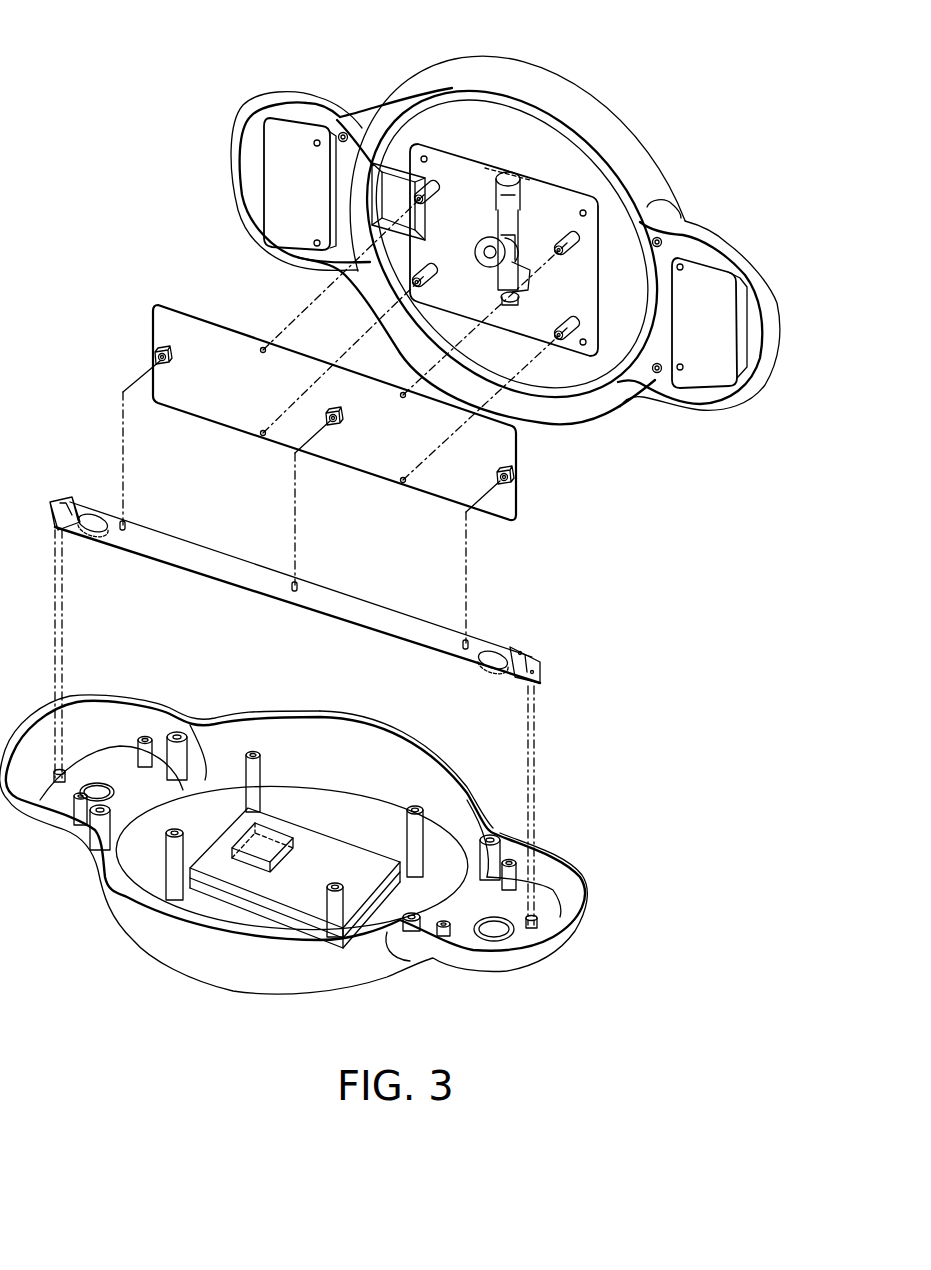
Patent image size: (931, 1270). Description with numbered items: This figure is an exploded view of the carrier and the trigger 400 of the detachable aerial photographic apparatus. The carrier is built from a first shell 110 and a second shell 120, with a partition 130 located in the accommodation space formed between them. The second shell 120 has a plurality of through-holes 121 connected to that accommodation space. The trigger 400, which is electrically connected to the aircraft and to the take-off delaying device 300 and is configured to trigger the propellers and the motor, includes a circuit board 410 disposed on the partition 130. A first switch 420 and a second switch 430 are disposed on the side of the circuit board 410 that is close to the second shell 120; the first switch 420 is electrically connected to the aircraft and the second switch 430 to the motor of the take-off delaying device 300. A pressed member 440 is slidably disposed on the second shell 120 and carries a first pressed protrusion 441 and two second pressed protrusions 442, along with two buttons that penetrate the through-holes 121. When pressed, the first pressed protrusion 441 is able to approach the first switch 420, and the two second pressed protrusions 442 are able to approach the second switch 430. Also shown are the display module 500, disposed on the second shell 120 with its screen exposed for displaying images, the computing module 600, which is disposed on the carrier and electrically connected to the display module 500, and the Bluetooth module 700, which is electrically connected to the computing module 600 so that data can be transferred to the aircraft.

The first shell 110 is at (537, 87).
The second shell 120 is at (322, 822).
The through-holes 121 is at (98, 792).
The partition 130 is at (574, 337).
The take-off delaying device 300 is at (489, 182).
The trigger 400 is at (373, 558).
The circuit board 410 is at (492, 500).
The first switch 420 is at (334, 427).
The second switch 430 is at (156, 356).
The pressed member 440 is at (328, 572).
The first pressed protrusion 441 is at (300, 586).
The second pressed protrusions 442 is at (128, 525).
The display module 500 is at (459, 915).
The computing module 600 is at (333, 860).
The Bluetooth module 700 is at (268, 838).